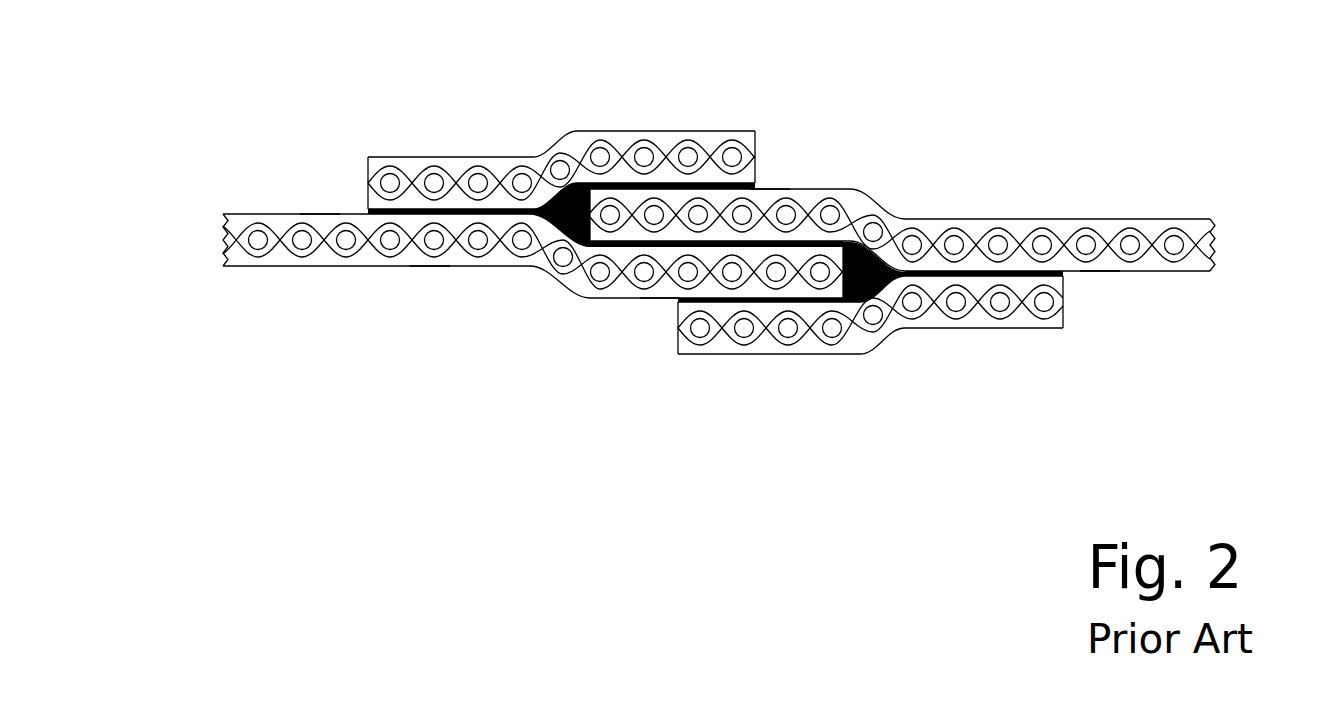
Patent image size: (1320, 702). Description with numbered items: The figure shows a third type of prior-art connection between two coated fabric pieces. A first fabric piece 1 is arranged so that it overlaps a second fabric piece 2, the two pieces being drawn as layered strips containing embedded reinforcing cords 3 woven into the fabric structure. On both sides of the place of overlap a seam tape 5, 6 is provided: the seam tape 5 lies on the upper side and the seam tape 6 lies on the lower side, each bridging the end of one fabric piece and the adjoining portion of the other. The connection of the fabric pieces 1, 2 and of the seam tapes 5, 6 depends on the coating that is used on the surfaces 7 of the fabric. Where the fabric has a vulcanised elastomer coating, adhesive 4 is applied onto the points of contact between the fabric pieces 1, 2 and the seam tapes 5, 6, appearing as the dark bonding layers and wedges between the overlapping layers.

The first fabric piece 1 is at (945, 194).
The second fabric piece 2 is at (213, 247).
The tension member cord 3 is at (985, 240).
The adhesive 4 is at (562, 235).
The seam tape 5 is at (765, 163).
The seam tape 6 is at (672, 327).
The surfaces 7 is at (317, 208).